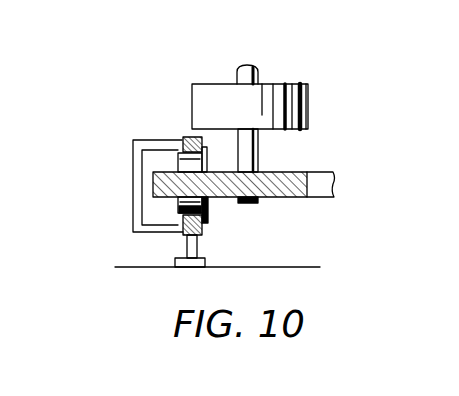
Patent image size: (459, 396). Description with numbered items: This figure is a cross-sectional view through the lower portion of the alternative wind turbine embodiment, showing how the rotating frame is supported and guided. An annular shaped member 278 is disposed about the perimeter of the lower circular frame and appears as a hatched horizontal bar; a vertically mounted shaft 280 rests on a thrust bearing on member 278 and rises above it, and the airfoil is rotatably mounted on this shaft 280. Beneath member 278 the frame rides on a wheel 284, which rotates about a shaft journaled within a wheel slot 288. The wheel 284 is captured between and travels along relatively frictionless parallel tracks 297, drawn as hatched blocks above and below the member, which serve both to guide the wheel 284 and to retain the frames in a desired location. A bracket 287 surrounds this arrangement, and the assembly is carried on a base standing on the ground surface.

The annular shaped member 278 is at (283, 172).
The vertically mounted shaft 280 is at (258, 70).
The wheel 284 is at (208, 207).
The outer bracket 287 is at (137, 188).
The wheel slot 288 is at (187, 173).
The parallel track 297 is at (183, 139).